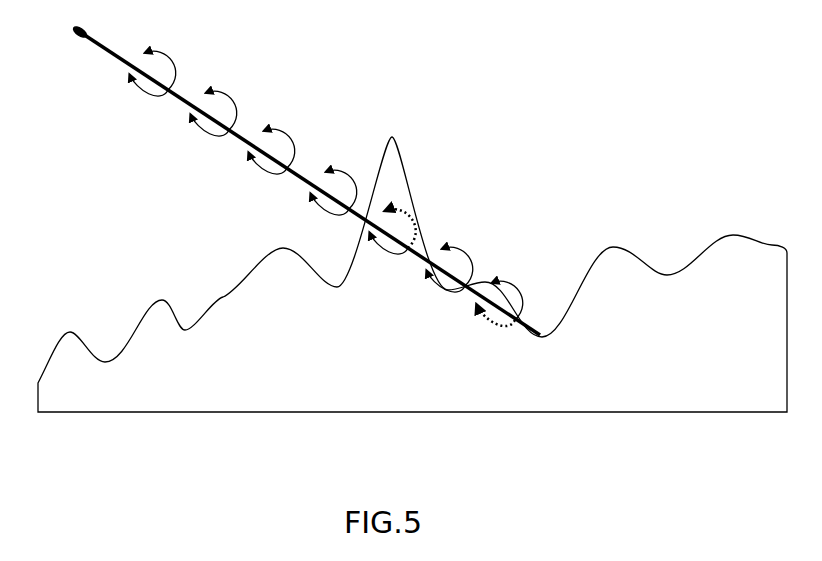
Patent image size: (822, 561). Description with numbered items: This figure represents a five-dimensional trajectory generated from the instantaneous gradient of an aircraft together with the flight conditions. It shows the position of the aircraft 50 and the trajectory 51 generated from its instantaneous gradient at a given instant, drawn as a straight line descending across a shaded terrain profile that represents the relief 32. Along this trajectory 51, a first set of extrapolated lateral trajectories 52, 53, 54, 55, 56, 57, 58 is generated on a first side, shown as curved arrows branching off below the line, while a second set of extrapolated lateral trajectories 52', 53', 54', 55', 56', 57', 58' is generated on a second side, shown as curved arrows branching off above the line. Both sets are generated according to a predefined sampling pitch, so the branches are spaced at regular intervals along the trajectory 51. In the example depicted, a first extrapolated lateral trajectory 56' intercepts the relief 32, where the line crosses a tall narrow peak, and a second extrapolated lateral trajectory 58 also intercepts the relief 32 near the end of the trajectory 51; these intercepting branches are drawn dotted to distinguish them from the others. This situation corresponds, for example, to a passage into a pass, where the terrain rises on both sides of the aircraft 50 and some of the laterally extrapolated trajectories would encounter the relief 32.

The relief 32 is at (163, 395).
The aircraft 50 is at (86, 31).
The trajectory 51 is at (112, 62).
The extrapolated lateral trajectory 52 is at (131, 99).
The extrapolated lateral trajectory 52' is at (182, 65).
The extrapolated lateral trajectory 53 is at (195, 138).
The extrapolated lateral trajectory 53' is at (238, 100).
The extrapolated lateral trajectory 54 is at (253, 172).
The extrapolated lateral trajectory 54' is at (295, 137).
The extrapolated lateral trajectory 55 is at (313, 214).
The extrapolated lateral trajectory 55' is at (342, 169).
The extrapolated lateral trajectory 56 is at (387, 263).
The first extrapolated lateral trajectory 56' is at (412, 214).
The extrapolated lateral trajectory 57 is at (444, 303).
The extrapolated lateral trajectory 57' is at (463, 248).
The second extrapolated lateral trajectory 58 is at (494, 335).
The extrapolated lateral trajectory 58' is at (527, 294).